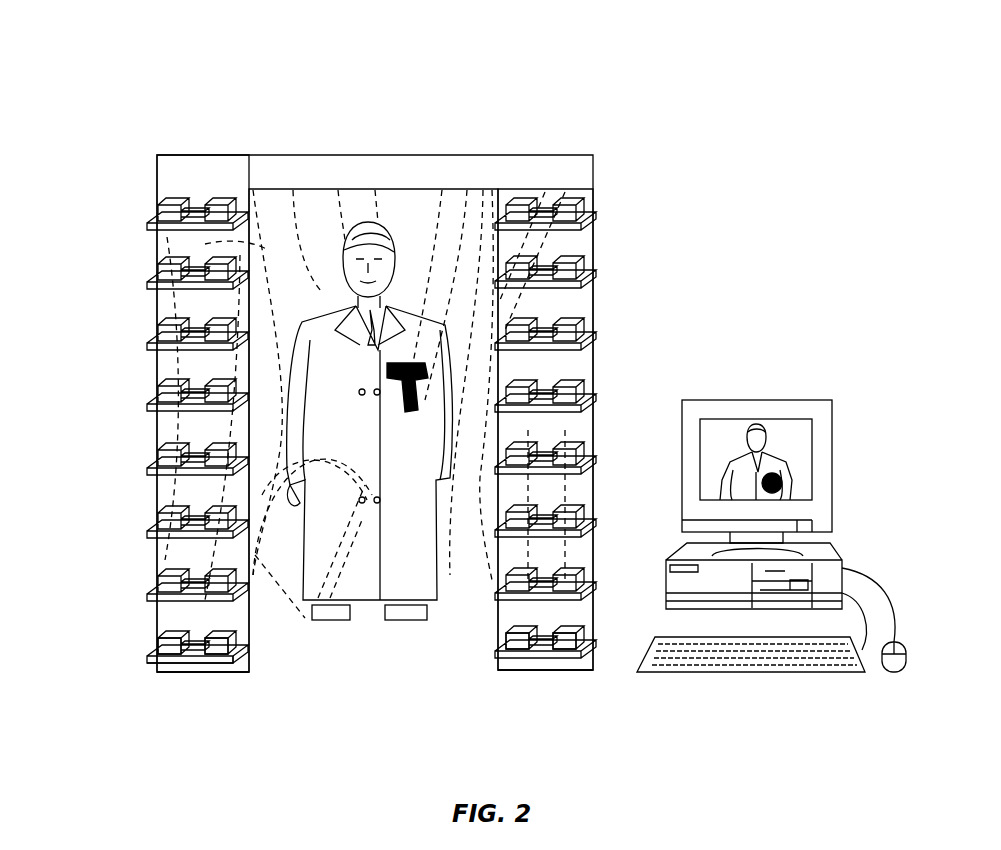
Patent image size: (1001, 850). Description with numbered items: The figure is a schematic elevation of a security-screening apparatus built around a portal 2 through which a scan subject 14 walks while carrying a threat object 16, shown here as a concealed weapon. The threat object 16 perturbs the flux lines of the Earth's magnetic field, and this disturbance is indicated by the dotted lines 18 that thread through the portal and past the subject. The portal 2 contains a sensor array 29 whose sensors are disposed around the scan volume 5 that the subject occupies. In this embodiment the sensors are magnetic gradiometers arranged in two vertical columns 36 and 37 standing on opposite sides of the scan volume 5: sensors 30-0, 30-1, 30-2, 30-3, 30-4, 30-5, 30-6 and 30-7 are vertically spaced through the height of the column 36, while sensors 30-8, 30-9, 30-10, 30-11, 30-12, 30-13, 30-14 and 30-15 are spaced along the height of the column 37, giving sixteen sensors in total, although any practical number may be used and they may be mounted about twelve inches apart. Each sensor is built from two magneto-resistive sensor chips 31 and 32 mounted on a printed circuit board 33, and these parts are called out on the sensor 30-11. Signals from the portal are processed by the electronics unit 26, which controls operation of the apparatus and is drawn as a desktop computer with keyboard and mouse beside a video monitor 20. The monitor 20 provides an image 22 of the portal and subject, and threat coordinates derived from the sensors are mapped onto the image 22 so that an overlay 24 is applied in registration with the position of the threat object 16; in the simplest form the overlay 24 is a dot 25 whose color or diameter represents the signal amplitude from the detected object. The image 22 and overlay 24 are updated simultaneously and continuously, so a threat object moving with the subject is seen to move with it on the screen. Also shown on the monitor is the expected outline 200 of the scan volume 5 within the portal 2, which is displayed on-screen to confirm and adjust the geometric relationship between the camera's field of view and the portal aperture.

The portal 2 is at (318, 163).
The scan volume 5 is at (448, 280).
The scan subject 14 is at (385, 210).
The threat object 16 is at (423, 365).
The dotted lines 18 is at (365, 449).
The video monitor 20 is at (761, 519).
The image 22 is at (789, 452).
The overlay 24 is at (812, 488).
The dot 25 is at (782, 487).
The electronics unit 26 is at (678, 582).
The sensor array 29 is at (592, 120).
The sensor 30-0 is at (157, 220).
The sensor 30-1 is at (157, 279).
The sensor 30-2 is at (157, 340).
The sensor 30-3 is at (157, 401).
The sensor 30-4 is at (157, 465).
The sensor 30-5 is at (157, 528).
The sensor 30-6 is at (157, 591).
The sensor 30-7 is at (157, 652).
The sensor 30-8 is at (586, 211).
The sensor 30-9 is at (586, 269).
The sensor 30-10 is at (586, 331).
The sensor 30-11 is at (586, 395).
The sensor 30-12 is at (586, 458).
The sensor 30-13 is at (586, 520).
The sensor 30-14 is at (498, 598).
The sensor 30-15 is at (497, 658).
The magneto-resistive sensor chip 31 is at (170, 644).
The magneto-resistive sensor chip 32 is at (228, 640).
The printed circuit board 33 is at (222, 663).
The vertical column 36 is at (195, 678).
The vertical column 37 is at (542, 677).
The expected outline 200 is at (802, 441).